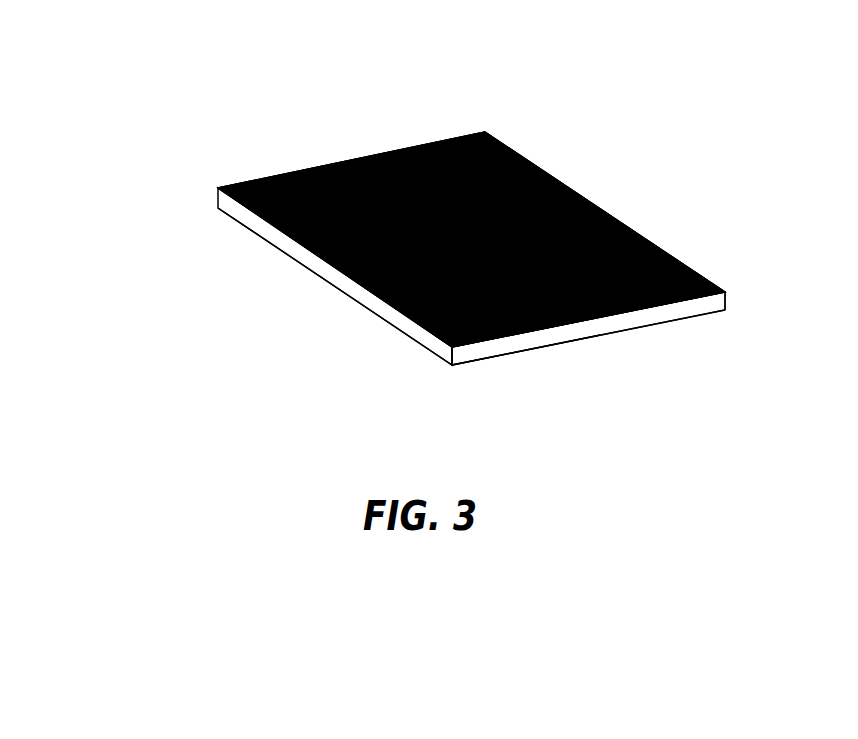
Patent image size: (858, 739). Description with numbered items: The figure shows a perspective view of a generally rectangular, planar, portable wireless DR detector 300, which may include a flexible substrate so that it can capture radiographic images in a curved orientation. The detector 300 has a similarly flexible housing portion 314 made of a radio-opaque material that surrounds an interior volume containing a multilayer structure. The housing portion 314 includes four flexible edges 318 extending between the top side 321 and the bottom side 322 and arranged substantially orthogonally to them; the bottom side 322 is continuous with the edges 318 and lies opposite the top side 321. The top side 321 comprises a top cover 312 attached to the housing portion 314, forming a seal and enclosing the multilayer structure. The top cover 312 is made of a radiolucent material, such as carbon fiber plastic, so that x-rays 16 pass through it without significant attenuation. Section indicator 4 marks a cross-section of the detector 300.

The portable wireless DR detector 300 is at (196, 145).
The x-rays 16 is at (436, 160).
The flexible edges 318 is at (330, 162).
The top cover 312 is at (392, 305).
The housing portion 314 is at (557, 337).
The top side 321 is at (655, 305).
The bottom side 322 is at (475, 378).
The section line 4- 4 is at (335, 262).